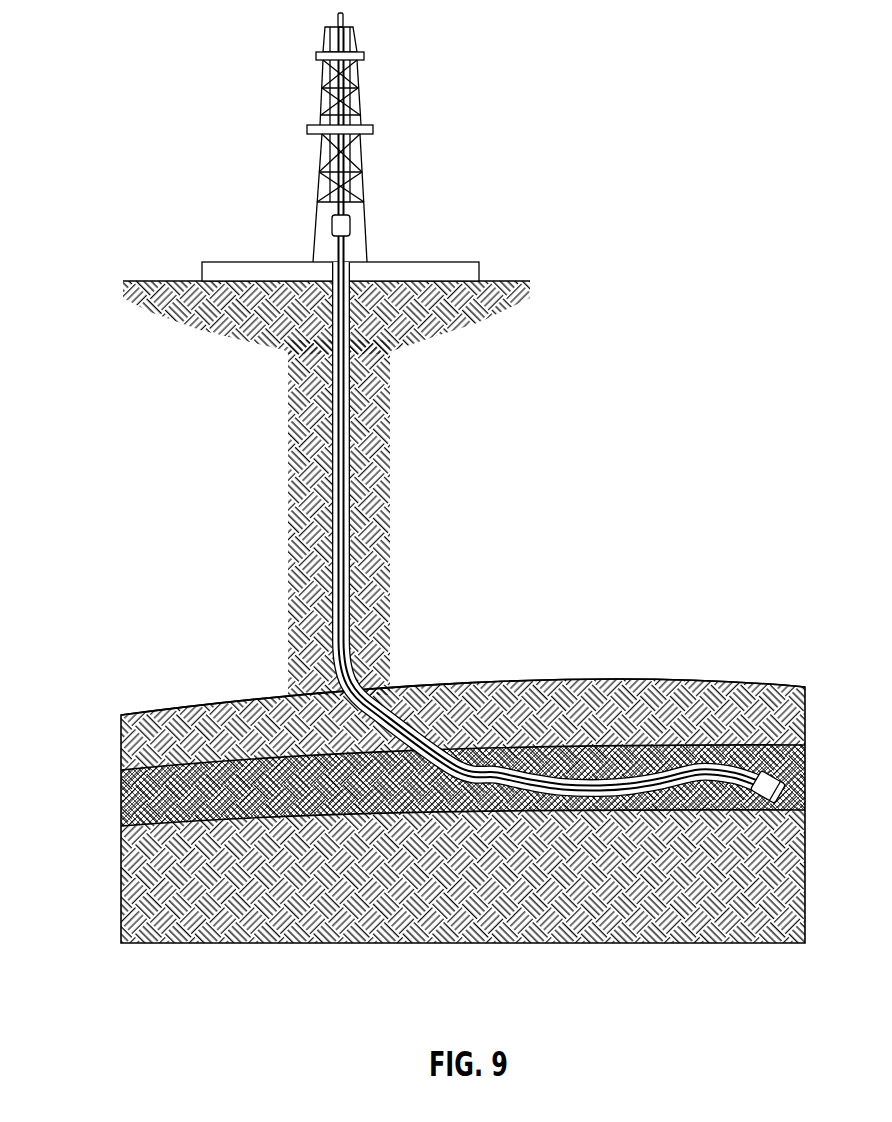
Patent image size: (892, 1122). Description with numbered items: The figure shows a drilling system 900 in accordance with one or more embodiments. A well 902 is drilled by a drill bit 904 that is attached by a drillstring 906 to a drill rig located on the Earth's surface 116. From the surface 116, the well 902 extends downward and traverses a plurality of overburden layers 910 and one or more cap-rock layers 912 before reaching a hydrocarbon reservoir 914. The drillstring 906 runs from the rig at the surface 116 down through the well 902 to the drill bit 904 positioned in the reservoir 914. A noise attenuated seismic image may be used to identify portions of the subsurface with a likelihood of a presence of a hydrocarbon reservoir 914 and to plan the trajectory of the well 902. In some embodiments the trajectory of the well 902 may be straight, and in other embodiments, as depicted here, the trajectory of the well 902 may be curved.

The drilling rig / derrick 900 is at (365, 156).
The well 902 is at (330, 420).
The drill bit 904 is at (773, 775).
The drillstring 906 is at (346, 250).
The overburden layers 910 is at (384, 412).
The cap-rock layers 912 is at (130, 740).
The hydrocarbon reservoir 914 is at (122, 812).
The Earth's surface 116 is at (517, 281).